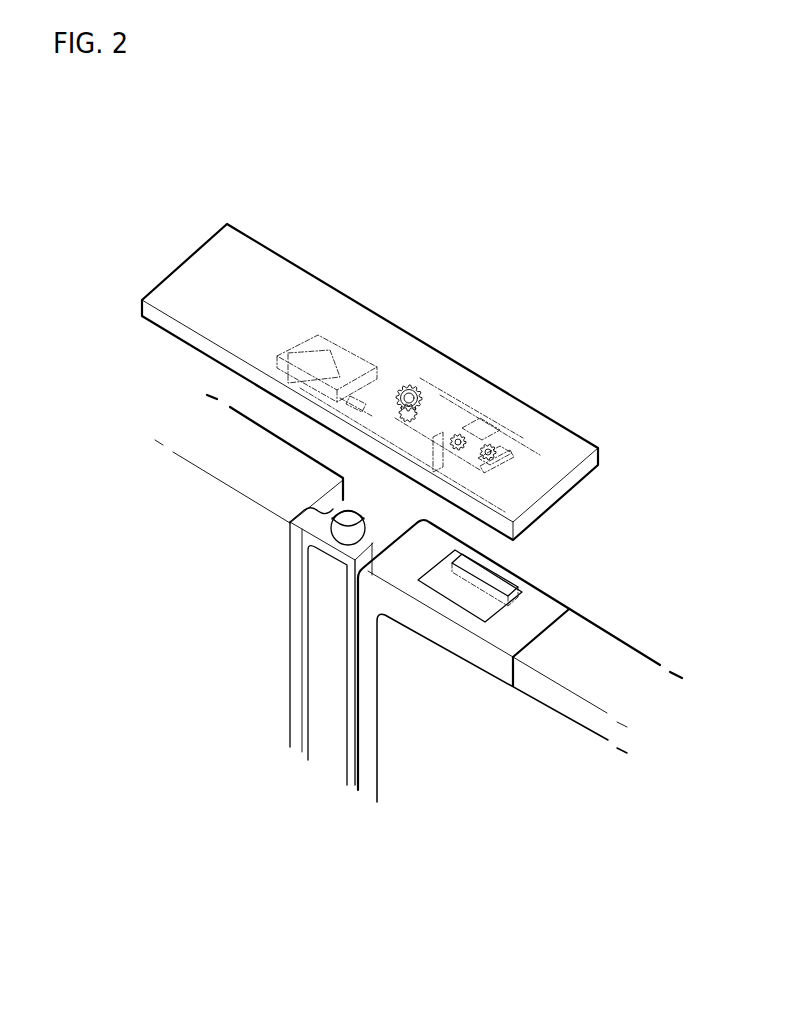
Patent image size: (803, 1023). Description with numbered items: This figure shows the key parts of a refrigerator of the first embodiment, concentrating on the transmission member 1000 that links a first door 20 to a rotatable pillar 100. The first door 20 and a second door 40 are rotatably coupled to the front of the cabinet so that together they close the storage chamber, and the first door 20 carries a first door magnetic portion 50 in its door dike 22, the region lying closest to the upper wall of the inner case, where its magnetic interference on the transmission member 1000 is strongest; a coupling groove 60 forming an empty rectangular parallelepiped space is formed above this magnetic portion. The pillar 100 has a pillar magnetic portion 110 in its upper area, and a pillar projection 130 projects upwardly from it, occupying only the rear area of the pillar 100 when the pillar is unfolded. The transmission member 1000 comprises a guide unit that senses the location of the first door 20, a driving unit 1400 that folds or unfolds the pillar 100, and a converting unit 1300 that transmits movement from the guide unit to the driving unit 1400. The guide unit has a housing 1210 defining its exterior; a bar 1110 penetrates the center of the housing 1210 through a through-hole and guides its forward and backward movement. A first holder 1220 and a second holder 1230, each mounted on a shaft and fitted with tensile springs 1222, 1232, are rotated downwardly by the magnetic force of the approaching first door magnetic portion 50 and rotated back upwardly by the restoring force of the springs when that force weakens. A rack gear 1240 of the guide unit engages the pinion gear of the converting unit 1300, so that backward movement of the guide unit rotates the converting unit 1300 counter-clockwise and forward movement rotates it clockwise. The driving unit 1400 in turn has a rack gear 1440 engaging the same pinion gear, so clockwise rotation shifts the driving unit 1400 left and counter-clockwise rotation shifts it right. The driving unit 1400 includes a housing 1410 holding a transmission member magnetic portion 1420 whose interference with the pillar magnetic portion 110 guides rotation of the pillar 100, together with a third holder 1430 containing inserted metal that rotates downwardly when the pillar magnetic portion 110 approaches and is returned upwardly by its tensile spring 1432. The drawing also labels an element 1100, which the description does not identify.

The first door 20 is at (520, 693).
The door dike 22 is at (507, 640).
The second door 40 is at (217, 458).
The first door magnetic portion 50 is at (518, 598).
The coupling groove 60 is at (493, 573).
The pillar 100 is at (287, 638).
The pillar magnetic portion 110 is at (338, 533).
The pillar projection 130 is at (347, 508).
The transmission member 1000 is at (322, 253).
The base plate 1100 is at (556, 469).
The bar 1110 is at (538, 518).
The housing 1210 is at (467, 442).
The first holder 1220 is at (502, 456).
The tensile spring 1222 is at (492, 461).
The second holder 1230 is at (497, 449).
The tensile spring 1232 is at (484, 445).
The rack gear 1240 is at (438, 388).
The converting unit 1300 is at (677, 272).
The driving unit 1400 is at (218, 339).
The housing 1410 is at (303, 358).
The transmission member magnetic portion 1420 is at (347, 398).
The third holder 1430 is at (375, 410).
The tensile spring 1432 is at (360, 406).
The rack gear 1440 is at (405, 425).